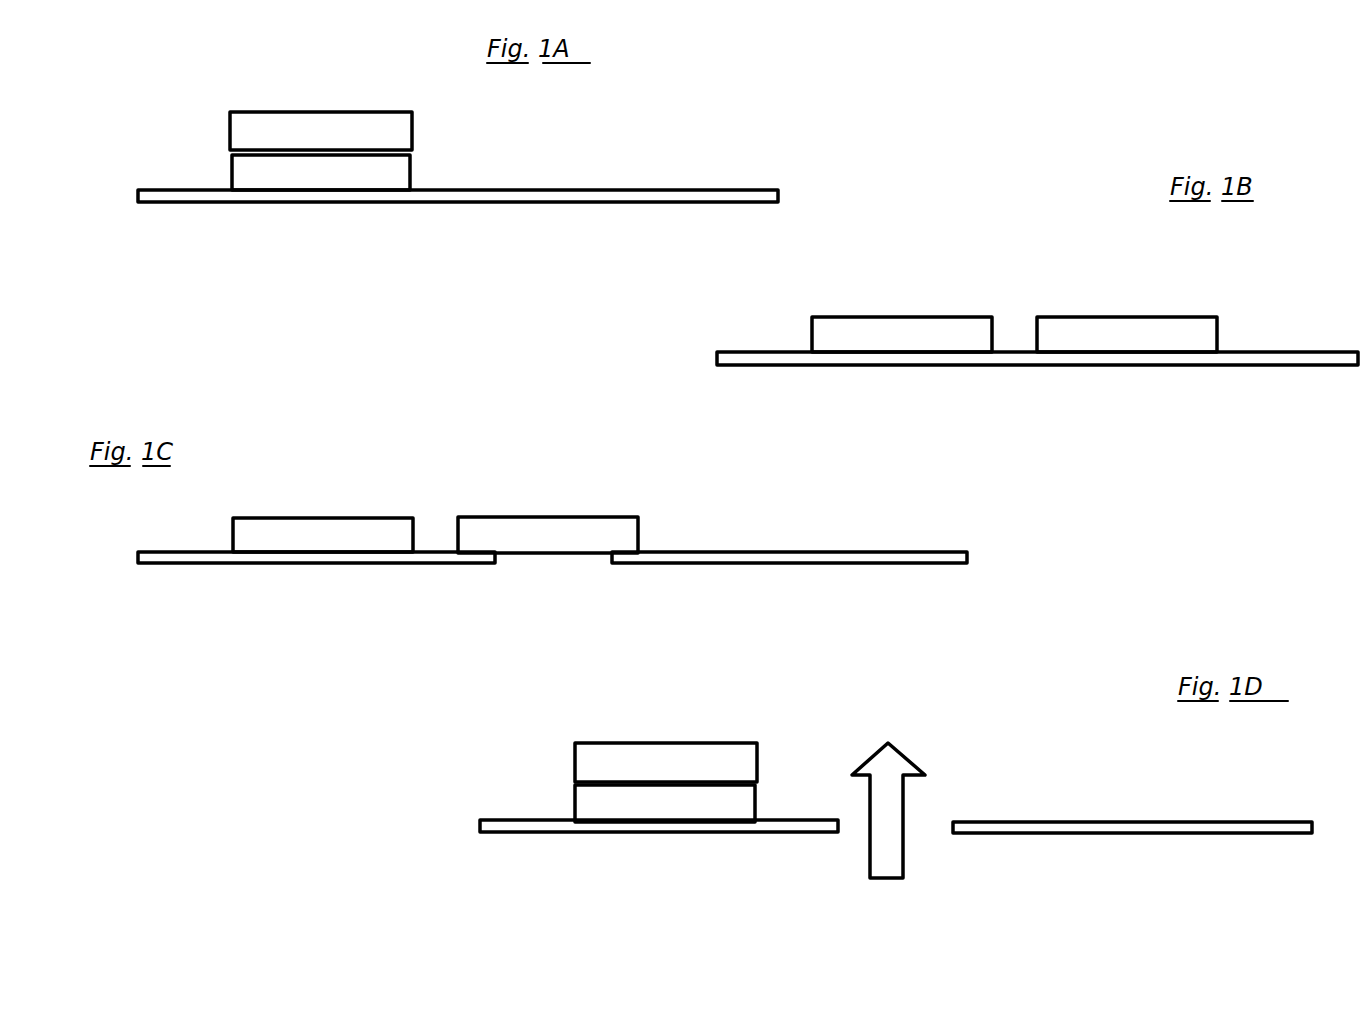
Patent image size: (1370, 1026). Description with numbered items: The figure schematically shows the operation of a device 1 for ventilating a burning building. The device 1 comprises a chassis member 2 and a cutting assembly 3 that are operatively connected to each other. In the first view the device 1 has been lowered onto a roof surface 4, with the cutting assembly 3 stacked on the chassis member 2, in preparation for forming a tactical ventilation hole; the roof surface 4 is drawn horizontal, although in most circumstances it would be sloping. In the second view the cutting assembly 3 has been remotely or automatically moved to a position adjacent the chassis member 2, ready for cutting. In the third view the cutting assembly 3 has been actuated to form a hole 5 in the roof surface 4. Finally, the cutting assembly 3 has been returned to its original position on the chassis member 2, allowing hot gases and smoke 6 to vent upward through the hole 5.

In FIG. 1A, the device 1 is at (169, 77).
In FIG. 1B, the device 1 is at (995, 221).
In FIG. 1C, the device 1 is at (475, 429).
In FIG. 1D, the device 1 is at (485, 687).
In FIG. 1A, the chassis member 2 is at (240, 176).
In FIG. 1B, the chassis member 2 is at (860, 332).
In FIG. 1C, the chassis member 2 is at (289, 530).
In FIG. 1D, the chassis member 2 is at (580, 800).
In FIG. 1A, the cutting assembly 3 is at (352, 125).
In FIG. 1B, the cutting assembly 3 is at (1154, 328).
In FIG. 1C, the cutting assembly 3 is at (608, 530).
In FIG. 1D, the cutting assembly 3 is at (666, 757).
In FIG. 1A, the roof surface 4 is at (583, 190).
In FIG. 1B, the roof surface 4 is at (1300, 352).
In FIG. 1C, the roof surface 4 is at (764, 552).
In FIG. 1D, the roof surface 4 is at (1044, 822).
In FIG. 1C, the hole 5 is at (568, 563).
In FIG. 1D, the hole 5 is at (930, 835).
In FIG. 1D, the hot gases and smoke 6 is at (880, 857).